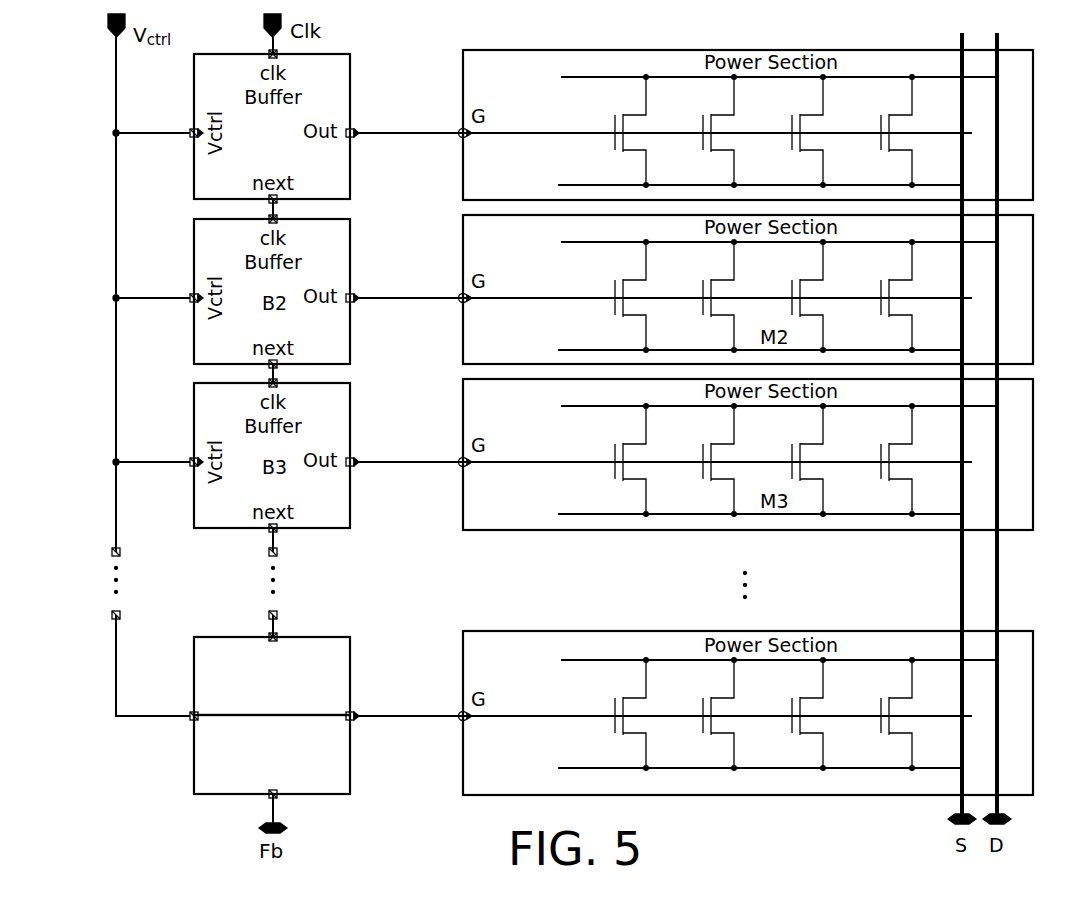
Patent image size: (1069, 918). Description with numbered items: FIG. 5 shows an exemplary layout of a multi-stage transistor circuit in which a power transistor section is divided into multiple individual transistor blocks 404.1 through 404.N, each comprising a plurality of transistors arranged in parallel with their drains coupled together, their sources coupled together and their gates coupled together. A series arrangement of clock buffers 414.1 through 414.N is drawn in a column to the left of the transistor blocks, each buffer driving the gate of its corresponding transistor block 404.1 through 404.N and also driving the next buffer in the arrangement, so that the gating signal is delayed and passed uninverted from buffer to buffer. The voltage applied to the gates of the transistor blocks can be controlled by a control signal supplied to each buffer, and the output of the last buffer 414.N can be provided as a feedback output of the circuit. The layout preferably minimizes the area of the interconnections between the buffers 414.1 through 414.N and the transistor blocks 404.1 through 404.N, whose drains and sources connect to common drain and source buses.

The buffer 414.1 is at (322, 66).
The buffer 414.N is at (322, 648).
The transistor block 404.1 is at (572, 95).
The transistor block 404.N is at (572, 677).